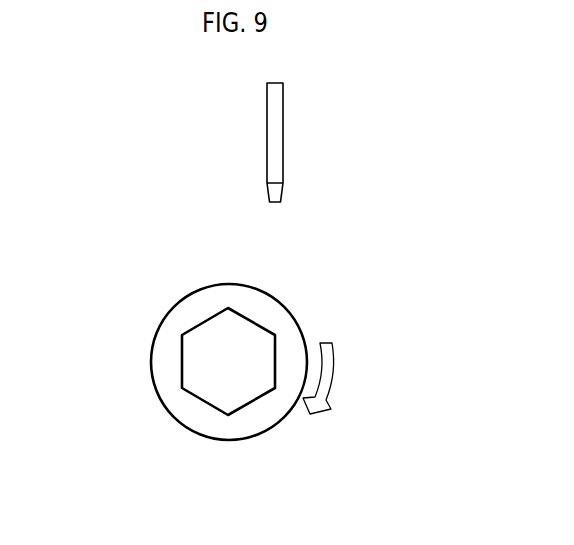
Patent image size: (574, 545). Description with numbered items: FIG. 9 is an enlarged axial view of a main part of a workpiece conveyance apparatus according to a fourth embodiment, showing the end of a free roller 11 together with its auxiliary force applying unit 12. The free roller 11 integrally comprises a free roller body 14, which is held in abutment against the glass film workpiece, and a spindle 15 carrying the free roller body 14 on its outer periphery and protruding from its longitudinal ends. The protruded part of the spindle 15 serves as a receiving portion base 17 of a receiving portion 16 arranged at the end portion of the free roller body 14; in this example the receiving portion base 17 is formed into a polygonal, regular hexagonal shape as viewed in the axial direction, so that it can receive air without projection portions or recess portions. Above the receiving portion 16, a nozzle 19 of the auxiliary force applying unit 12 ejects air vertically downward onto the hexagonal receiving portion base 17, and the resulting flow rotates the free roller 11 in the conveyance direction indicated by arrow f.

The free roller 11 is at (220, 273).
The auxiliary force applying unit 12 is at (343, 272).
The free roller body 14 is at (160, 325).
The spindle 15 is at (218, 385).
The receiving portion 16 is at (162, 302).
The receiving portion base 17 is at (228, 361).
The nozzle 19 is at (274, 322).
The rotation direction f is at (327, 373).